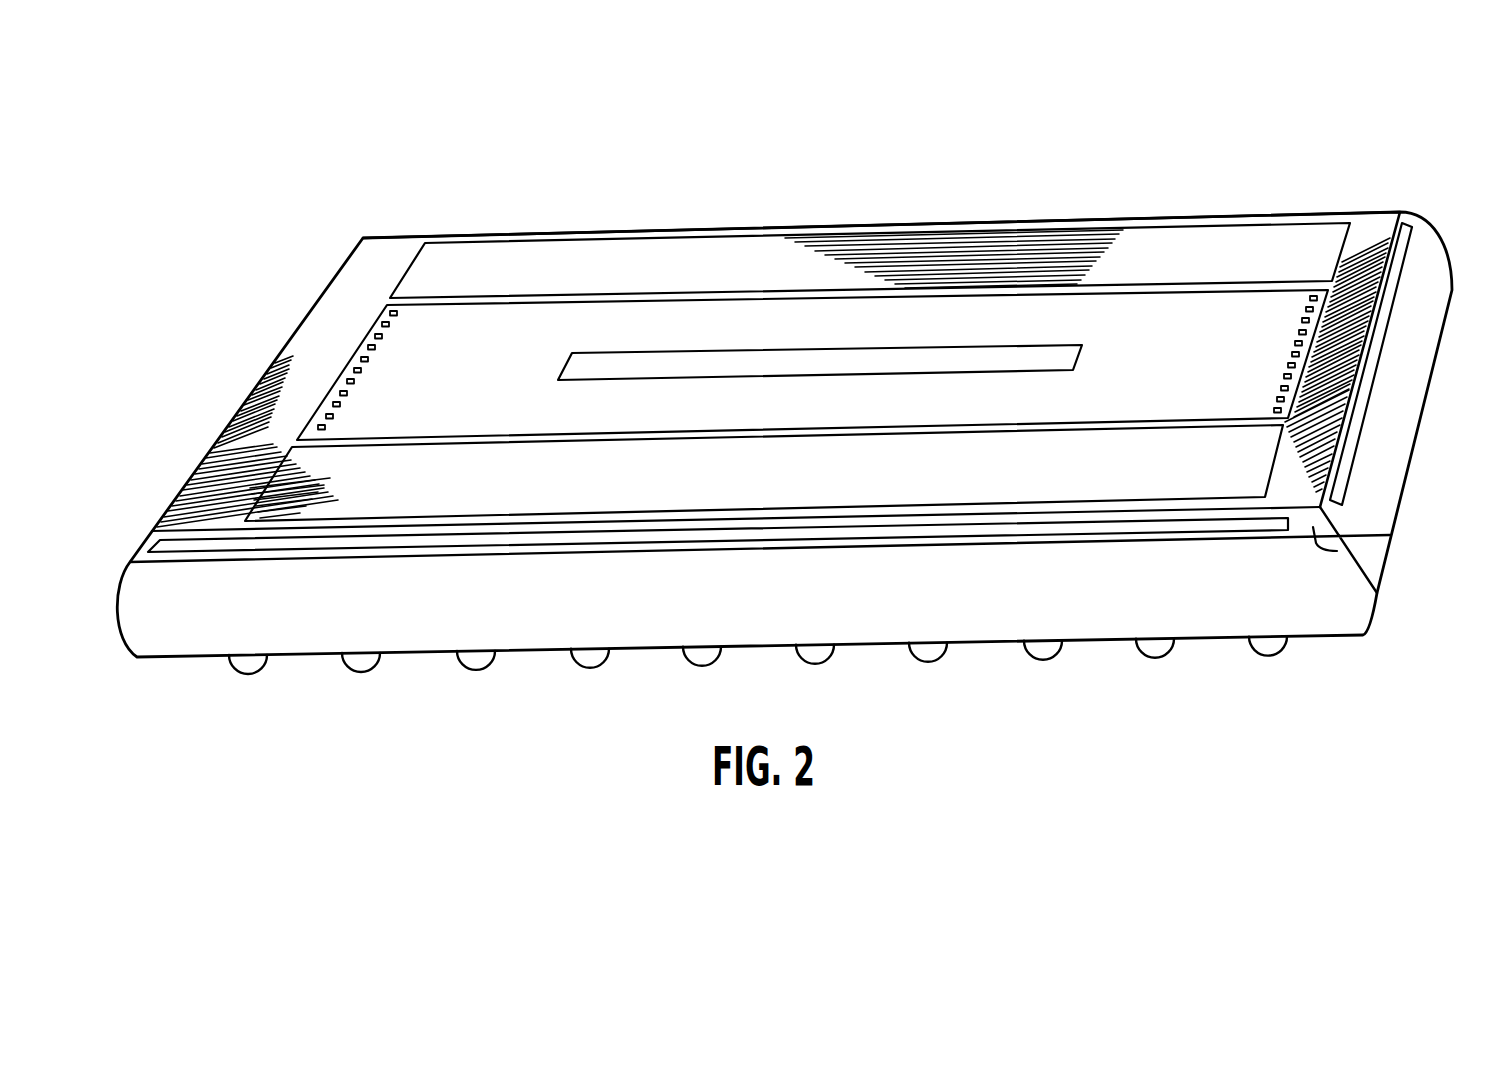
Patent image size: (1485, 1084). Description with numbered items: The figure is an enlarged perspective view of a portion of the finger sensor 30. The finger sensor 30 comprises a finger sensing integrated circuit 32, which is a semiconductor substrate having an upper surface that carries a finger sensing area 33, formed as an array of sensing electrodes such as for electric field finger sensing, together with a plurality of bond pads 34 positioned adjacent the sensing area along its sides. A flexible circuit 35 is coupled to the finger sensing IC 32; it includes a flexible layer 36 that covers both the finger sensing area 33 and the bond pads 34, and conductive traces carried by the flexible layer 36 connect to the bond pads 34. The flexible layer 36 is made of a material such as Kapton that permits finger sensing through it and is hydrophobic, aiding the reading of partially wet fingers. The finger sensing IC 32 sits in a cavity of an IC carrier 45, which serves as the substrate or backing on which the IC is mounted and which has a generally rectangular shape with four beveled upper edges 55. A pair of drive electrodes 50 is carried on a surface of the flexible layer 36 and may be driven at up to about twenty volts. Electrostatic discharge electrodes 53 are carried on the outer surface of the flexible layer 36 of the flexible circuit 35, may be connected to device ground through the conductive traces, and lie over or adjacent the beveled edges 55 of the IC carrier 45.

The finger sensor 30 is at (1253, 150).
The finger sensing integrated circuit 32 is at (1120, 310).
The finger sensing area 33 is at (878, 347).
The bond pads 34 is at (367, 337).
The flexible circuit 35 is at (791, 224).
The flexible layer 36 is at (453, 236).
The IC carrier 45 is at (1008, 652).
The drive electrodes 50 is at (650, 260).
The electrostatic discharge electrodes 53 is at (1350, 457).
The beveled upper edges 55 is at (1335, 551).